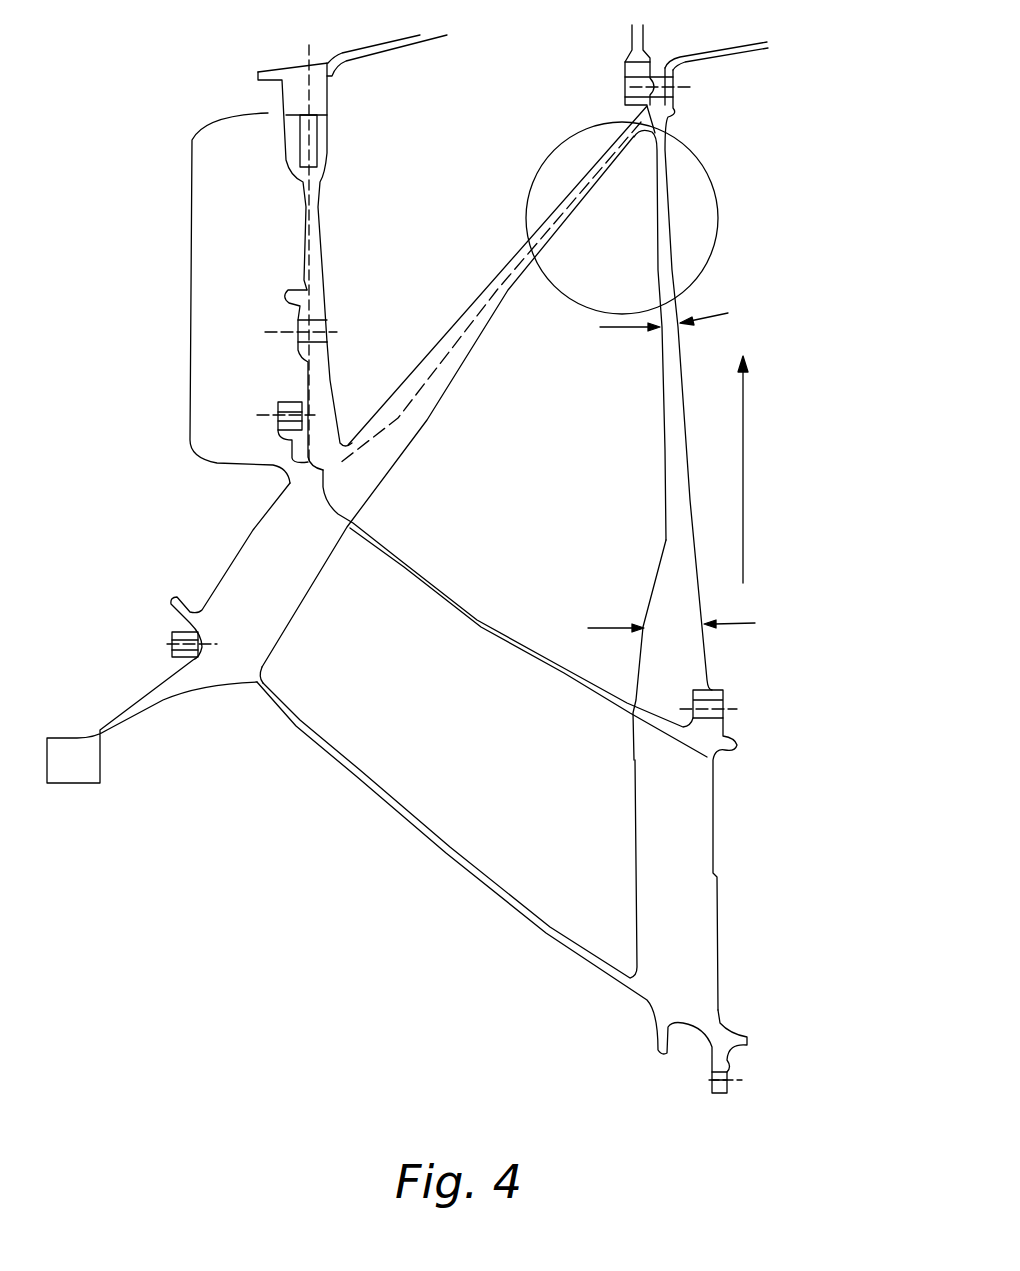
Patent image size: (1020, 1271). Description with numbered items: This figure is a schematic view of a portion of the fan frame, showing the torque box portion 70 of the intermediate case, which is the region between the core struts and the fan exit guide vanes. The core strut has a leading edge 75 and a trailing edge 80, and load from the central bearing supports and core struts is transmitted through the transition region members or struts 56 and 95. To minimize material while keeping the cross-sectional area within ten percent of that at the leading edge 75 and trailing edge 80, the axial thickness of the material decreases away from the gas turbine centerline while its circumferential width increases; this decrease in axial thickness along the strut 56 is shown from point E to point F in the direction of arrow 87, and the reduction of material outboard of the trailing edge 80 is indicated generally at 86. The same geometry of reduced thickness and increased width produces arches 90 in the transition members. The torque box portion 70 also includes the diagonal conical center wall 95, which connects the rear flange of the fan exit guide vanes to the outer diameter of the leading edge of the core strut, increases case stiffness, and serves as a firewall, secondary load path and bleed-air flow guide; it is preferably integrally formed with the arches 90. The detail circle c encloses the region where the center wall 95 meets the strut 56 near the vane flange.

The torque box portion 70 is at (190, 318).
The leading edge of the core strut 75 is at (243, 542).
The trailing edge of the core strut 80 is at (715, 875).
The reduction in material 86 is at (650, 598).
The arrow 87 is at (743, 470).
The arches 90 is at (368, 462).
The center wall 95 is at (528, 216).
The strut 56 is at (678, 377).
The detail circle c is at (702, 163).
The point E is at (681, 625).
The point F is at (672, 315).